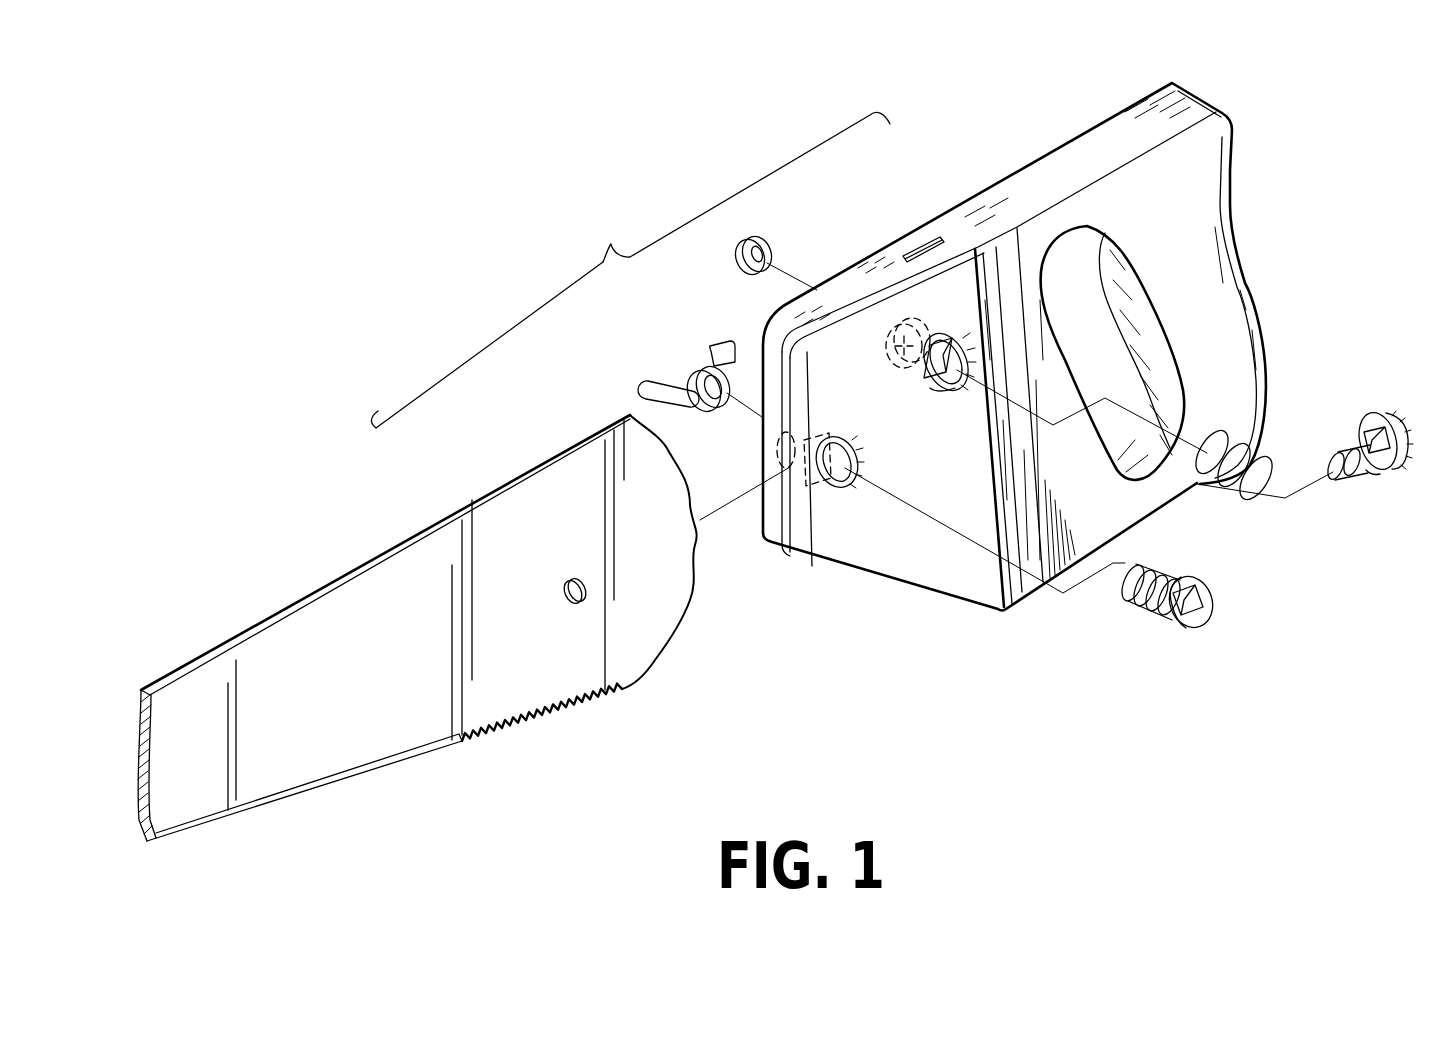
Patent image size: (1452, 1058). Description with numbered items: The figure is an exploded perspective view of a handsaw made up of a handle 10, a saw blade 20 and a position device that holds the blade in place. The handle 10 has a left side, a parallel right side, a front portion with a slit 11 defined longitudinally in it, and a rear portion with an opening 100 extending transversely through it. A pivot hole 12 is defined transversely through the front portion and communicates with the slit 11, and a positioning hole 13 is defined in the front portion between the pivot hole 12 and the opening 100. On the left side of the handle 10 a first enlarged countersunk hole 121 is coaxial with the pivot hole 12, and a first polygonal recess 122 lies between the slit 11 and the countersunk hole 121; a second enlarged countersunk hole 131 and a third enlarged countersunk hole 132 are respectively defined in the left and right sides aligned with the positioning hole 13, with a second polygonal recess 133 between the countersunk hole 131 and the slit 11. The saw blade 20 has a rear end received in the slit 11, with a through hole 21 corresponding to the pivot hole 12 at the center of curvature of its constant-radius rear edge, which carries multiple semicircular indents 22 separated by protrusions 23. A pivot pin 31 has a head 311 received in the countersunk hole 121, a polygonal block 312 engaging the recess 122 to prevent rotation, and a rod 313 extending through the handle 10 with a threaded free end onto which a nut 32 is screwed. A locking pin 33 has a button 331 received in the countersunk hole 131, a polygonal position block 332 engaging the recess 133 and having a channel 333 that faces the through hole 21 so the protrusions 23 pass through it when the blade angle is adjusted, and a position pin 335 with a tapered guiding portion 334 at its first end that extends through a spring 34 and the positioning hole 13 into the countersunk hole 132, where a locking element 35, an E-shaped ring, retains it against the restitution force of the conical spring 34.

The handle 10 is at (1000, 166).
The opening 100 is at (1077, 255).
The slit 11 is at (907, 258).
The pivot hole 12 is at (770, 447).
The first enlarged countersunk hole 121 is at (853, 460).
The first polygonal recess 122 is at (816, 488).
The positioning hole 13 is at (911, 370).
The second enlarged countersunk hole 131 is at (943, 390).
The third enlarged countersunk hole 132 is at (885, 360).
The second polygonal recess 133 is at (953, 338).
The saw blade 20 is at (322, 578).
The through hole 21 is at (575, 582).
The semicircular indents 22 is at (697, 595).
The protrusion 23 is at (698, 538).
The pivot pin 31 is at (1186, 606).
The head 311 is at (1212, 593).
The block 312 is at (1181, 585).
The rod 313 is at (1146, 566).
The nut 32 is at (652, 382).
The locking pin 33 is at (1361, 475).
The button 331 is at (1381, 410).
The position block 332 is at (1372, 414).
The channel 333 is at (1378, 476).
The tapered guiding portion 334 is at (1363, 447).
The position pin 335 is at (1352, 482).
The spring 34 is at (1242, 448).
The locking element 35 is at (773, 238).